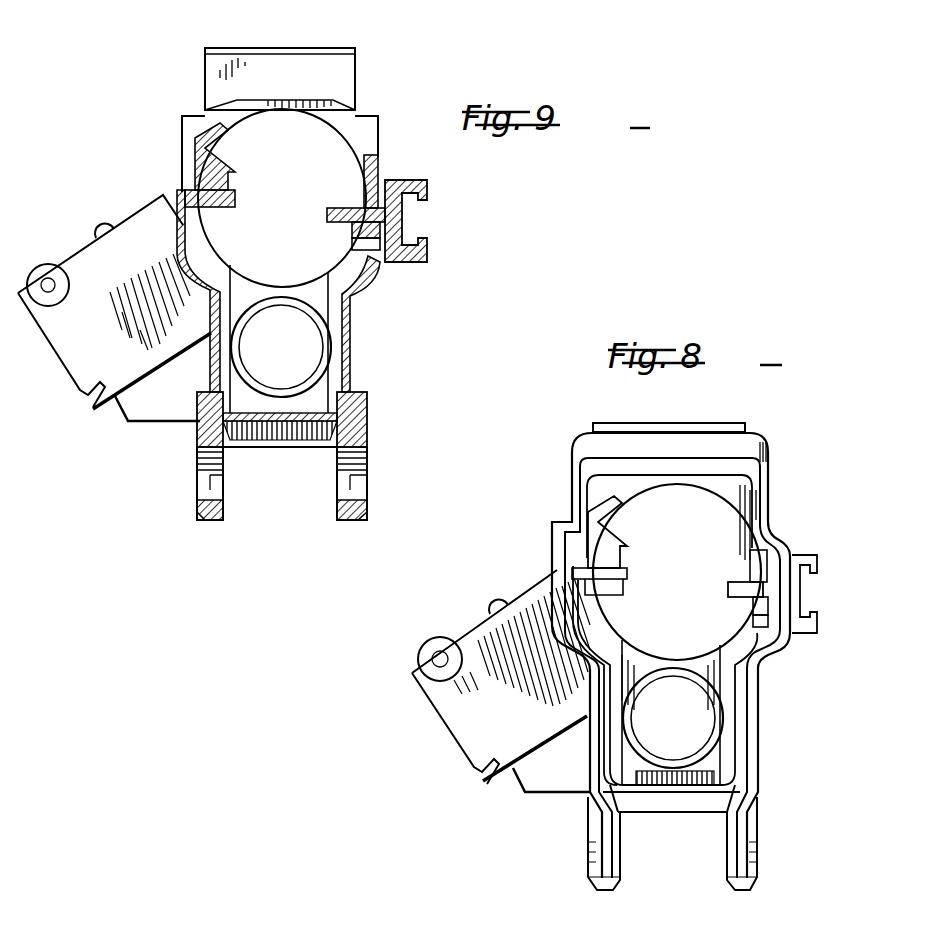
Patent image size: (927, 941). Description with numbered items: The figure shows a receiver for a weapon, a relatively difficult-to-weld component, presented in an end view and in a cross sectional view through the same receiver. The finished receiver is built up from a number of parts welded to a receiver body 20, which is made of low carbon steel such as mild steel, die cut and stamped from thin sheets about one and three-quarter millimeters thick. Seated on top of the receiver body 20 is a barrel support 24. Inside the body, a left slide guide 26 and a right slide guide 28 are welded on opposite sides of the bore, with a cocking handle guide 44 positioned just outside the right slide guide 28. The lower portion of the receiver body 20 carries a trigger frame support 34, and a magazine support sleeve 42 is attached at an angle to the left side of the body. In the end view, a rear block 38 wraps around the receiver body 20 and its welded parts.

In FIG. 9, the receiver body 20 is at (182, 127).
In FIG. 9, the barrel support 24 is at (215, 65).
In FIG. 8, the barrel support 24 is at (737, 422).
In FIG. 9, the left slide guide 26 is at (202, 179).
In FIG. 8, the left slide guide 26 is at (602, 536).
In FIG. 9, the right slide guide 28 is at (403, 214).
In FIG. 8, the right slide guide 28 is at (763, 583).
In FIG. 9, the trigger frame support 34 is at (340, 512).
In FIG. 8, the trigger frame support 34 is at (750, 830).
In FIG. 8, the rear block 38 is at (575, 452).
In FIG. 9, the magazine support sleeve 42 is at (62, 343).
In FIG. 8, the magazine support sleeve 42 is at (458, 730).
In FIG. 9, the cocking handle guide 44 is at (407, 258).
In FIG. 8, the cocking handle guide 44 is at (802, 633).